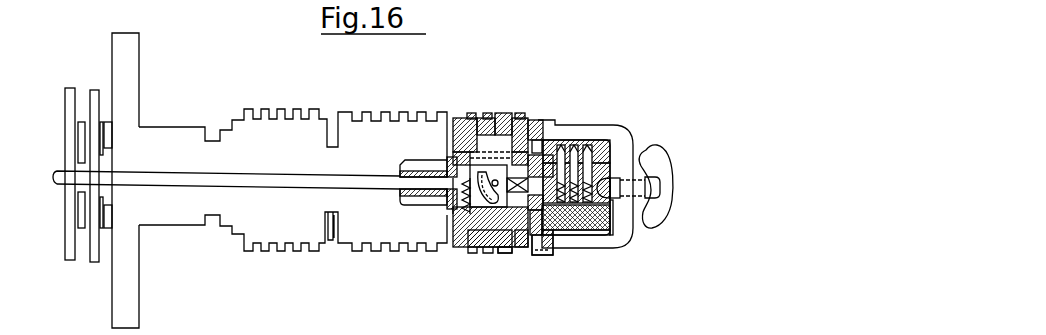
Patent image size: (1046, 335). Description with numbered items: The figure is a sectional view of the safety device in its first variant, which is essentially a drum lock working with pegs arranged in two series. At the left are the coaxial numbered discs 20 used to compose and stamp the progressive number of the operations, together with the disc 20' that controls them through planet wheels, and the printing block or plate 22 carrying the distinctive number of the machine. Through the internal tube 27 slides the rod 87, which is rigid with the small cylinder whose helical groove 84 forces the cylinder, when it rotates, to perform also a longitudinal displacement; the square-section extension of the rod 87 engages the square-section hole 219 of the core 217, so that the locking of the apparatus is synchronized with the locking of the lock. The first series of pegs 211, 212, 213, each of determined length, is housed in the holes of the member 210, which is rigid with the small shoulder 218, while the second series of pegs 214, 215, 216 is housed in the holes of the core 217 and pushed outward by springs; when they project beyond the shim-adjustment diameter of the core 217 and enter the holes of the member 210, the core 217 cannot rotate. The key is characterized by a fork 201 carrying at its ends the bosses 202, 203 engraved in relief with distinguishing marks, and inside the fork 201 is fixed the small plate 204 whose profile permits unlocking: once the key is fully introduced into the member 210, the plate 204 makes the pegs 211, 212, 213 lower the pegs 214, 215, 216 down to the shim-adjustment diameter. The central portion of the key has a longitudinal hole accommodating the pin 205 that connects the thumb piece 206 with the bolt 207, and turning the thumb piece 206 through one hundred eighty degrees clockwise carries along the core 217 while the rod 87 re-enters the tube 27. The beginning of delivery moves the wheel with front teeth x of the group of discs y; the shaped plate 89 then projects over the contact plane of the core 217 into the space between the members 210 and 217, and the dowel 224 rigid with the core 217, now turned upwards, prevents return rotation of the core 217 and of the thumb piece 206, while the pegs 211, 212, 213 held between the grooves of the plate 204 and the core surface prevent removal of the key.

The rod 87 is at (303, 173).
The printing block or plate 22 is at (412, 176).
The internal tube 27 is at (410, 199).
The numbered discs 20 is at (490, 210).
The helical slot 84 is at (468, 118).
The shaped plate 89 is at (488, 118).
The disc 20' is at (513, 96).
The boss 202 is at (538, 128).
The square-section hole 219 is at (540, 140).
The peg of the first series 211 is at (561, 145).
The peg of the first series 212 is at (576, 145).
The peg of the first series 213 is at (590, 145).
The small plate 204 is at (606, 140).
The fork 201 is at (617, 133).
The pin 205 is at (636, 170).
The thumb piece 206 is at (663, 150).
The bolt 207 is at (617, 222).
The member 210 is at (613, 222).
The peg of the second series 216 is at (603, 236).
The peg of the second series 215 is at (592, 220).
The peg of the second series 214 is at (568, 243).
The dowel 224 is at (541, 240).
The boss 203 is at (523, 250).
The small shoulder 218 is at (519, 254).
The core 217 is at (481, 240).
The wheel with front teeth x is at (450, 215).
The group of discs y is at (440, 253).